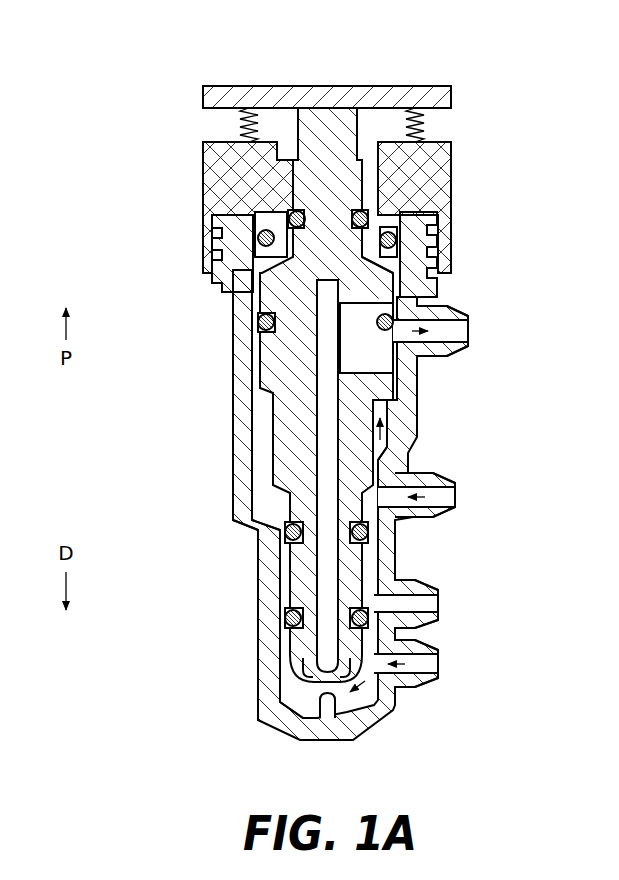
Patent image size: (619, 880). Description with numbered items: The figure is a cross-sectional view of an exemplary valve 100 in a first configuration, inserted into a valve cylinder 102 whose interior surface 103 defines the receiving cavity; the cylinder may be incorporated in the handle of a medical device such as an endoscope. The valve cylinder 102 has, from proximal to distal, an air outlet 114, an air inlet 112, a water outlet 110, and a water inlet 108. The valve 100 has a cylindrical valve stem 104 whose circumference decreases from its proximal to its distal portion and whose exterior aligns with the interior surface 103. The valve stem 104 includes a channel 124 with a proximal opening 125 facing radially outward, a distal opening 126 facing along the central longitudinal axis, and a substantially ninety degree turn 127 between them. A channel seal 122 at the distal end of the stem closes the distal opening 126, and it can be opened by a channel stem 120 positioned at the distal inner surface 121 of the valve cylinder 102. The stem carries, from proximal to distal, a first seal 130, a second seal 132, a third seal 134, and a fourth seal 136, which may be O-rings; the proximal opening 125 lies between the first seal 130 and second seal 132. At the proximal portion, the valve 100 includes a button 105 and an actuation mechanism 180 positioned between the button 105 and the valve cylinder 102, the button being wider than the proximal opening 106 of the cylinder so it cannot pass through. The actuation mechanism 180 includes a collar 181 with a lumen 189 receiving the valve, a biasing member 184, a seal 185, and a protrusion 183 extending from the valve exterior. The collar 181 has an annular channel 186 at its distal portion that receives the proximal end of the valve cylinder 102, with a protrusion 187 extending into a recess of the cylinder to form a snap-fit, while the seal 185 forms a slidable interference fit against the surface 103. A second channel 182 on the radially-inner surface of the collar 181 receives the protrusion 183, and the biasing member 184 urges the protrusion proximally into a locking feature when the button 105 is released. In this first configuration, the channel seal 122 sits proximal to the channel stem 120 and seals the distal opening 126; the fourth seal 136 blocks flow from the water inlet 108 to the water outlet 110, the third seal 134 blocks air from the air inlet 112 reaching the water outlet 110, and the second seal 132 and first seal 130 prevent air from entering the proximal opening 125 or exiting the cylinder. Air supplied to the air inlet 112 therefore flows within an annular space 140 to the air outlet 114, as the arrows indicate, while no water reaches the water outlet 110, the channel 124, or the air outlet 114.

The valve 100 is at (183, 73).
The valve cylinder 102 is at (252, 467).
The interior surface 103 is at (252, 373).
The valve stem 104 is at (268, 348).
The button 105 is at (400, 86).
The proximal opening 106 is at (407, 217).
The water inlet 108 is at (433, 667).
The water outlet 110 is at (430, 607).
The air inlet 112 is at (450, 500).
The air outlet 114 is at (462, 332).
The channel stem 120 is at (380, 703).
The distal inner surface 121 is at (337, 740).
The channel seal 122 is at (290, 693).
The channel 124 is at (418, 372).
The proximal opening 125 is at (383, 293).
The distal opening 126 is at (313, 655).
The turn 127 is at (303, 289).
The first seal 130 is at (268, 218).
The second seal 132 is at (270, 322).
The third seal 134 is at (292, 532).
The fourth seal 136 is at (292, 618).
The annular space 140 is at (385, 400).
The actuation mechanism 180 is at (218, 173).
The collar 181 is at (440, 157).
The second channel 182 is at (273, 187).
The protrusion 183 is at (280, 153).
The biasing member 184 is at (240, 112).
The seal 185 is at (262, 238).
The annular channel 186 is at (438, 223).
The protrusion 187 is at (442, 252).
The lumen 189 is at (290, 143).